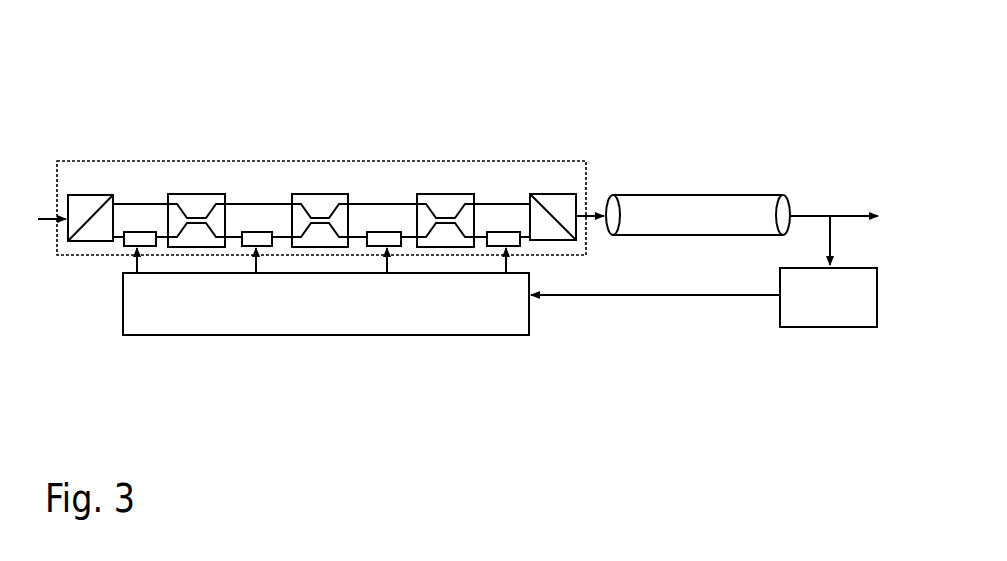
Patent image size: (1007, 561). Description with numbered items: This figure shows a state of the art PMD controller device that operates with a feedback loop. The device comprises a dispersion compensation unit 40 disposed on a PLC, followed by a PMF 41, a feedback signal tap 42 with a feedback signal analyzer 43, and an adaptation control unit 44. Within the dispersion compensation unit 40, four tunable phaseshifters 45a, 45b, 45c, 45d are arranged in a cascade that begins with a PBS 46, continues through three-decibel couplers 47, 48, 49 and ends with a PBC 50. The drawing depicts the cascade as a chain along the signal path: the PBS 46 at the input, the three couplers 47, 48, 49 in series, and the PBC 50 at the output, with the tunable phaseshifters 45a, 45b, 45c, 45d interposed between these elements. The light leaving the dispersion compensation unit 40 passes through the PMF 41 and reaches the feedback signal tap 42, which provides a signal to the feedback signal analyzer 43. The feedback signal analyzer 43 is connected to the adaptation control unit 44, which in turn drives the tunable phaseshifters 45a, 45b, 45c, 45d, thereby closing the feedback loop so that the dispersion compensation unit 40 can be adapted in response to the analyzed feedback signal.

The dispersion compensation unit 40 is at (567, 172).
The PMF 41 is at (697, 203).
The feedback signal tap 42 is at (828, 233).
The feedback signal analyzer 43 is at (704, 297).
The adaptation control unit 44 is at (326, 291).
The tunable phaseshifter 45a is at (137, 232).
The tunable phaseshifter 45b is at (257, 232).
The tunable phaseshifter 45c is at (386, 232).
The tunable phaseshifter 45d is at (500, 232).
The PBS 46 is at (88, 205).
The 3 dB coupler 47 is at (197, 200).
The 3 dB coupler 48 is at (317, 200).
The 3 dB coupler 49 is at (445, 200).
The PBC 50 is at (553, 200).